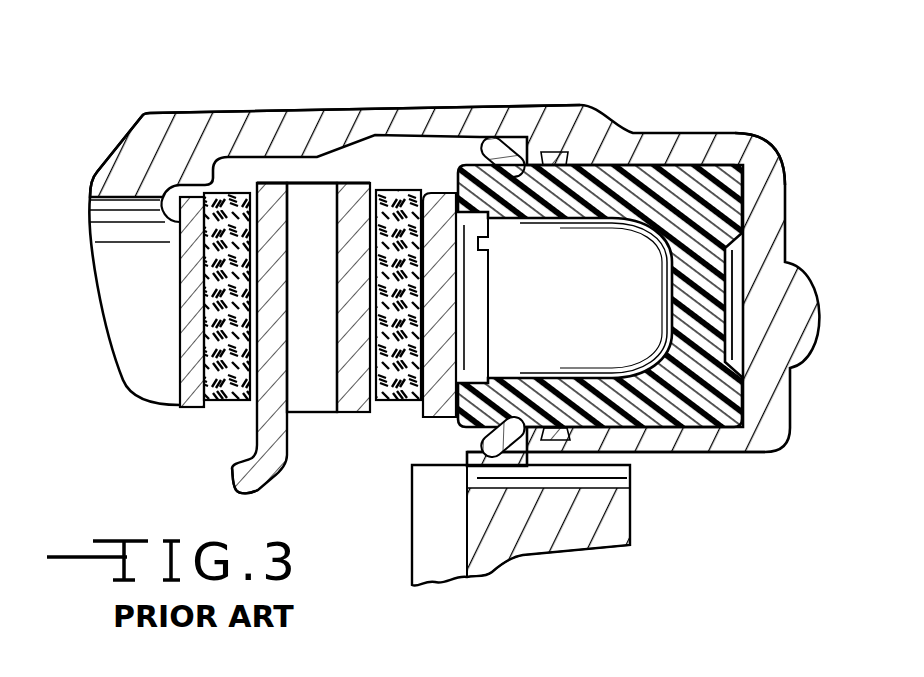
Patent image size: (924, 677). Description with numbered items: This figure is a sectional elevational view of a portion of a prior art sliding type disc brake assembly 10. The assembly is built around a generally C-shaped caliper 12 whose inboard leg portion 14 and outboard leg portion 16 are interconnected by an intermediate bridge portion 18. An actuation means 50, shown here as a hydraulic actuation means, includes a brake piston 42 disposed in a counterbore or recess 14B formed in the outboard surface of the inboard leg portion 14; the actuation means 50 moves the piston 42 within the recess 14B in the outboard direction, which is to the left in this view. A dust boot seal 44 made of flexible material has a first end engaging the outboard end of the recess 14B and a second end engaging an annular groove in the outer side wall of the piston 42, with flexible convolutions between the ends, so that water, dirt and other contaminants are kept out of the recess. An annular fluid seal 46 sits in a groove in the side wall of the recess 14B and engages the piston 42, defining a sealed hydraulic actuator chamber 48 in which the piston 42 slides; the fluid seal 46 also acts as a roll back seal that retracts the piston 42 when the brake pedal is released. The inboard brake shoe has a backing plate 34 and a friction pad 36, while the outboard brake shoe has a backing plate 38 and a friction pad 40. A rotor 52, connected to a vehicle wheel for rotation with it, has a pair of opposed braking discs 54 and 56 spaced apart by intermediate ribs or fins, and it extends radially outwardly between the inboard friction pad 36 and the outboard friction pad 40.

The disc brake assembly 10 is at (753, 118).
The caliper 12 is at (180, 113).
The inboard leg portion 14 is at (705, 150).
The recess 14B is at (712, 420).
The outboard leg portion 16 is at (115, 306).
The intermediate bridge portion 18 is at (478, 122).
The backing plate 34 is at (447, 196).
The friction pad 36 is at (395, 192).
The backing plate 38 is at (183, 405).
The friction pad 40 is at (223, 400).
The brake piston 42 is at (732, 407).
The dust boot seal 44 is at (490, 425).
The fluid seal 46 is at (530, 463).
The hydraulic actuator chamber 48 is at (738, 284).
The actuation means 50 is at (731, 238).
The rotor 52 is at (264, 478).
The braking disc 54 is at (340, 190).
The braking disc 56 is at (258, 188).